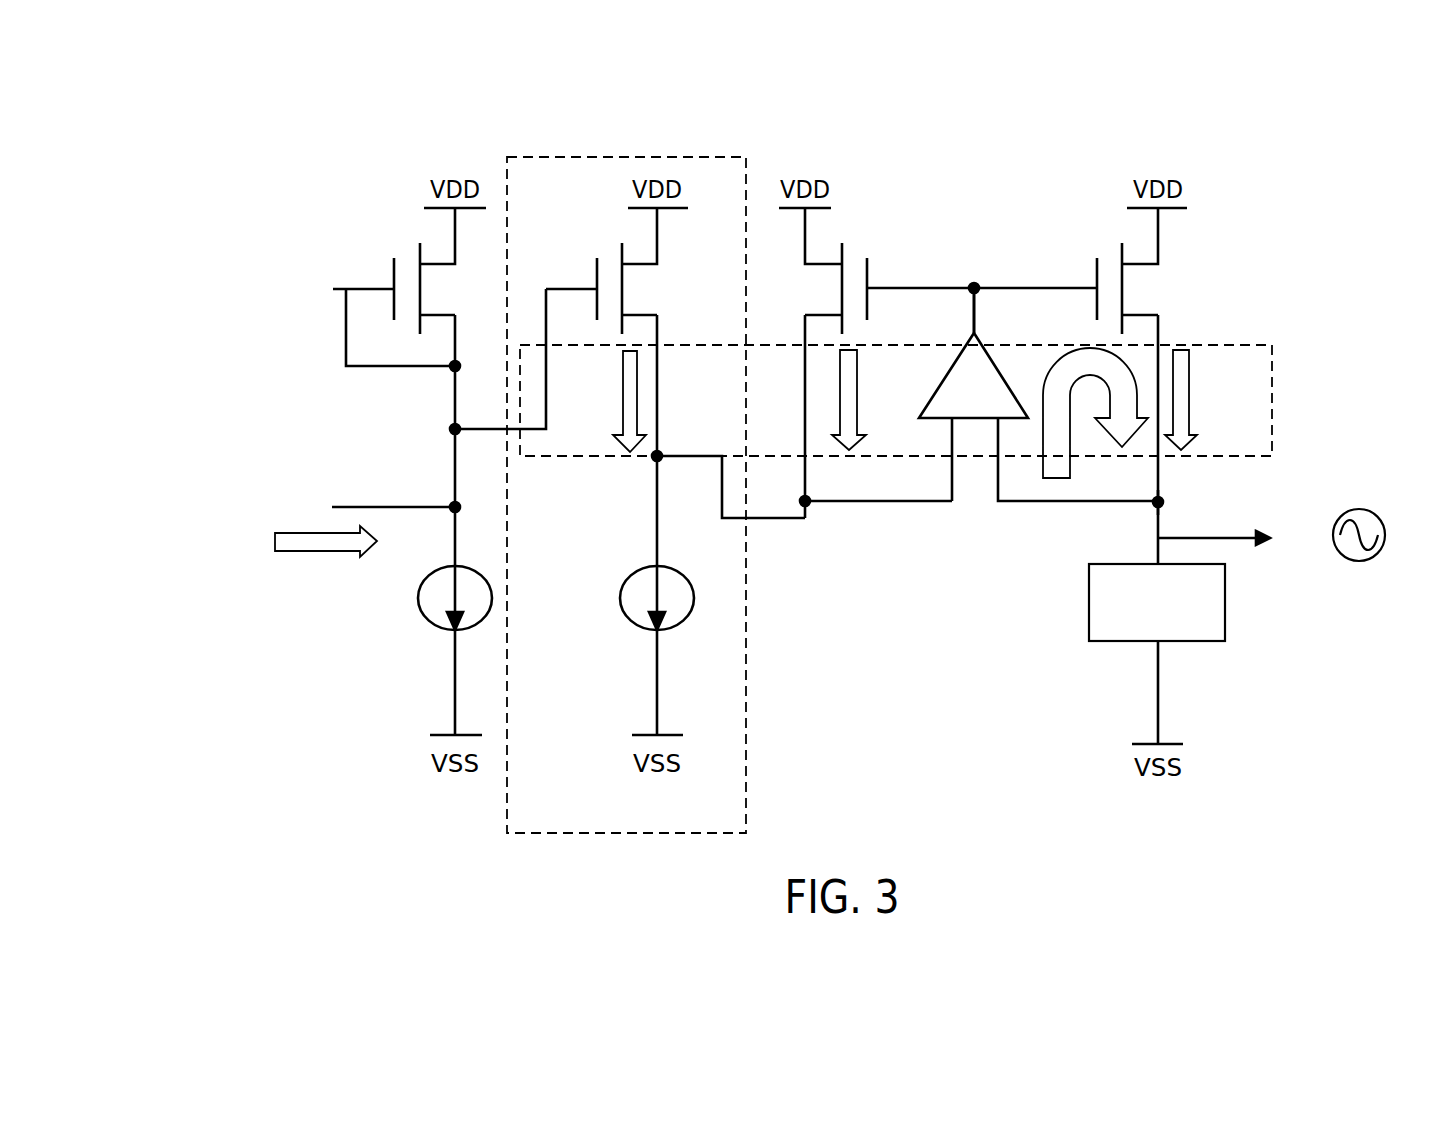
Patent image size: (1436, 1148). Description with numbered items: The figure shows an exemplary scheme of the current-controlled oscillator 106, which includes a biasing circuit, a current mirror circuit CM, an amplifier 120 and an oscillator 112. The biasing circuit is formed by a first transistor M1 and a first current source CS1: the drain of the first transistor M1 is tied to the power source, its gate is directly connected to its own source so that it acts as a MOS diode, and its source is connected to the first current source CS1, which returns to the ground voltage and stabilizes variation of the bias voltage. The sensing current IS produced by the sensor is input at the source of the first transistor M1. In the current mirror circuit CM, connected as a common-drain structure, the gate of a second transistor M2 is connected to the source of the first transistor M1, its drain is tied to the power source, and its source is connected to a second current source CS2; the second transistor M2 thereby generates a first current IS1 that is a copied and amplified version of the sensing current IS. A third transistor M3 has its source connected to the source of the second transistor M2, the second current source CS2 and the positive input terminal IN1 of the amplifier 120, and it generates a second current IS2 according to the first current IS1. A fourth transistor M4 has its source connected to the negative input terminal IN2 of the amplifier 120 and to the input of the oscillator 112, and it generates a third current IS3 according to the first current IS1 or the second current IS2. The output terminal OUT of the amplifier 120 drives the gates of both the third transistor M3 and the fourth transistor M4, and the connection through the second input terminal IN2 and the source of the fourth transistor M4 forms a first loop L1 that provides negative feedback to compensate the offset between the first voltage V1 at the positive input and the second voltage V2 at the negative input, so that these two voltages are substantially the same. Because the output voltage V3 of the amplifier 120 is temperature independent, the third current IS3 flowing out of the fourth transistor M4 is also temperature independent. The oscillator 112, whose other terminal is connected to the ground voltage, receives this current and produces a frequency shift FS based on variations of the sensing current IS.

The current-controlled oscillator 106 is at (282, 143).
The current mirror circuit CM is at (557, 153).
The first transistor M1 is at (409, 289).
The second transistor M2 is at (569, 332).
The third transistor M3 is at (875, 363).
The fourth transistor M4 is at (1081, 386).
The first current source CS1 is at (438, 617).
The second current source CS2 is at (640, 617).
The sensing current IS is at (367, 525).
The first current IS1 is at (606, 401).
The second current IS2 is at (870, 400).
The third current IS3 is at (1201, 400).
The first voltage V1 is at (876, 521).
The second voltage V2 is at (1180, 504).
The output voltage V3 is at (976, 289).
The output terminal OUT is at (952, 280).
The amplifier 120 is at (974, 428).
The first input terminal IN1 is at (947, 428).
The second input terminal IN2 is at (1003, 428).
The oscillator 112 is at (1136, 615).
The first loop L1 is at (1095, 413).
The frequency shift FS is at (1271, 535).